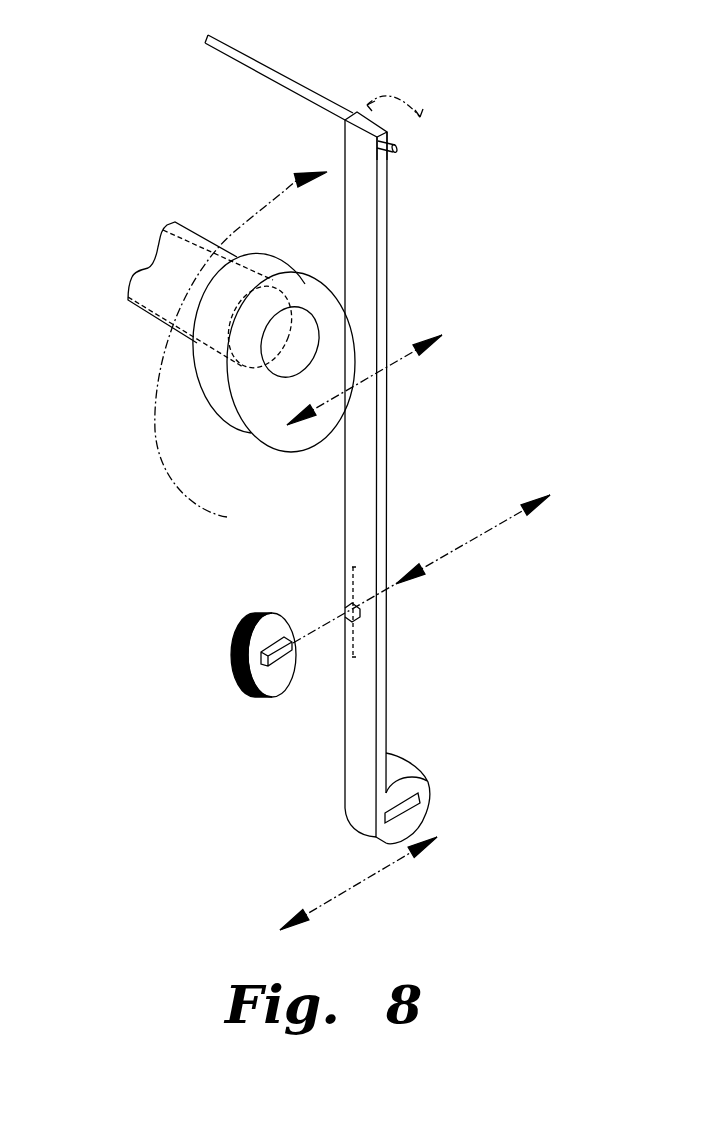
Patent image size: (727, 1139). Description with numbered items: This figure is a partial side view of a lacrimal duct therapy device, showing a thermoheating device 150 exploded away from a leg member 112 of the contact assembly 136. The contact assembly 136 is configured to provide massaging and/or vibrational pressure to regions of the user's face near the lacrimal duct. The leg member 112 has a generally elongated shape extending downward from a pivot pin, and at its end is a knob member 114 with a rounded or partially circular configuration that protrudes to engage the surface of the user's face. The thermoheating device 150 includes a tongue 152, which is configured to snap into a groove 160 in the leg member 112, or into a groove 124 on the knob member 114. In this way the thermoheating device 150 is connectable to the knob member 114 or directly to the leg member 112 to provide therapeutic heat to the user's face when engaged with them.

The leg member 112 is at (345, 727).
The knob member 114 is at (407, 762).
The groove 124 is at (402, 797).
The contact assembly 136 is at (168, 175).
The thermoheating device 150 is at (218, 623).
The tongue 152 is at (279, 664).
The groove 160 is at (342, 610).